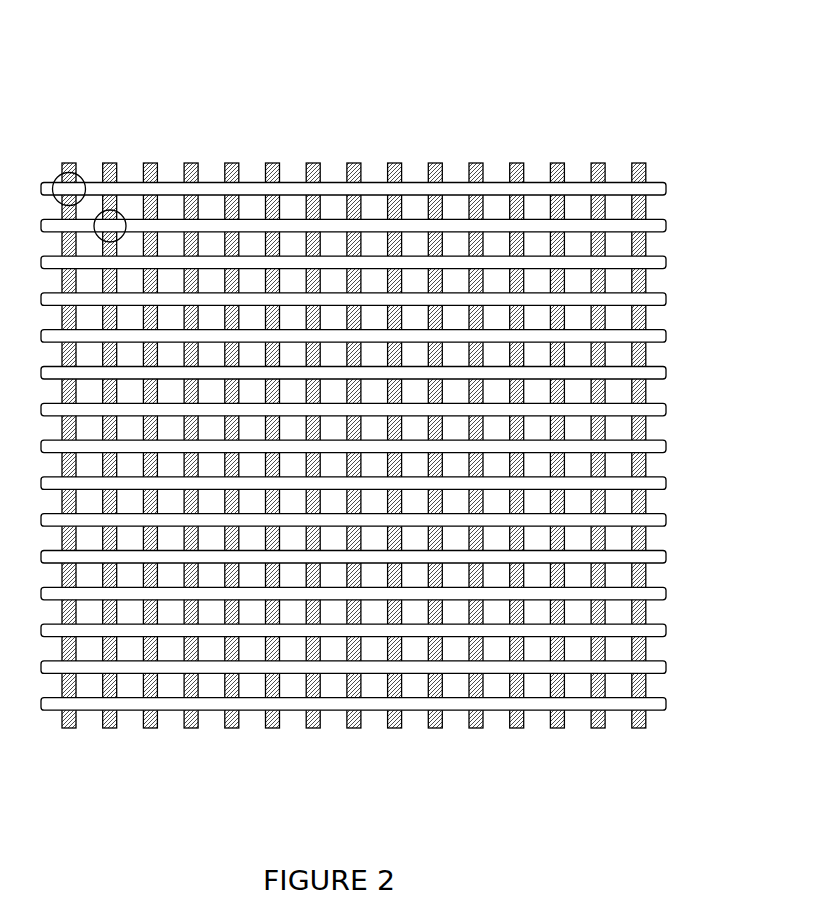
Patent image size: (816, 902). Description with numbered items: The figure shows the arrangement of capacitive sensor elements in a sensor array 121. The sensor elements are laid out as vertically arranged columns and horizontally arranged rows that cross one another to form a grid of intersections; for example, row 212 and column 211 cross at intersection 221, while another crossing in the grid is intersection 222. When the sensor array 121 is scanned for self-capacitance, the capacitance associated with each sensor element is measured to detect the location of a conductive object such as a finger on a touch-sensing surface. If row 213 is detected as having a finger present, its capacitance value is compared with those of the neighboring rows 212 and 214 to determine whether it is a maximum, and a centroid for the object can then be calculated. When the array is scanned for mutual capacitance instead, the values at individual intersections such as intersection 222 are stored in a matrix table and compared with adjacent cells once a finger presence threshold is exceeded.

The sensor array 121 is at (388, 375).
The column 211 is at (69, 151).
The row 212 is at (690, 189).
The row 213 is at (685, 233).
The row 214 is at (681, 277).
The intersection 221 is at (85, 165).
The intersection 222 is at (123, 201).